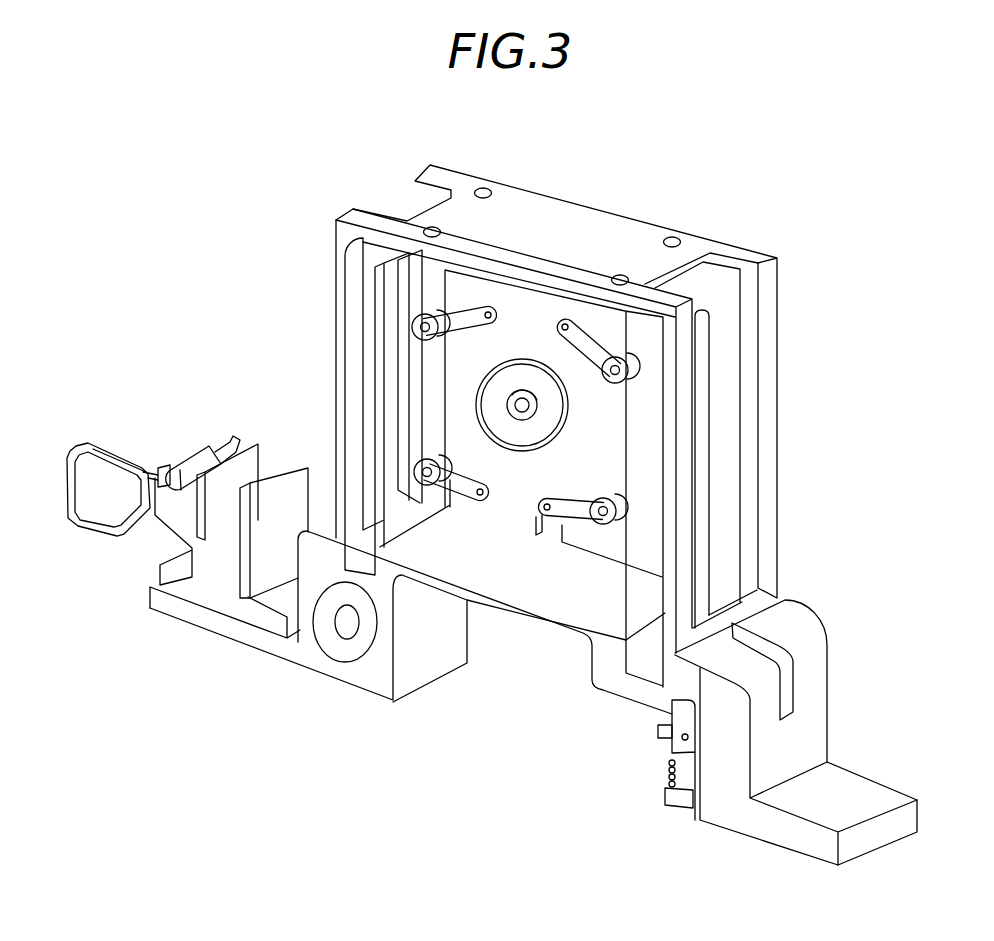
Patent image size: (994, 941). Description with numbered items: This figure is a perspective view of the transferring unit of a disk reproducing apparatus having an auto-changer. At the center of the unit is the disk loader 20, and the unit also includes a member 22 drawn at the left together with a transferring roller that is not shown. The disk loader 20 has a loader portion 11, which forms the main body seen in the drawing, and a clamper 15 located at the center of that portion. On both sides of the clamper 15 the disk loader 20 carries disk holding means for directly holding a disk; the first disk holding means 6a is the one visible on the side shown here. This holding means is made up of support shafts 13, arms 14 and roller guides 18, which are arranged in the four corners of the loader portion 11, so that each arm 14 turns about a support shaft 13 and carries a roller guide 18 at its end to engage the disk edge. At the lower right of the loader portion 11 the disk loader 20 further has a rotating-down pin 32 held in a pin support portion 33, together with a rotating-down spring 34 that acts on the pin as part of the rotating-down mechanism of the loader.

The loader portion 11 is at (647, 527).
The support shafts 13 is at (543, 508).
The arms 14 is at (521, 420).
The clamper 15 is at (542, 420).
The roller guides 18 is at (427, 342).
The disk loader 20 is at (407, 397).
The member 22 is at (96, 443).
The first disk holding means 6a is at (487, 463).
The rotating-down pin 32 is at (658, 737).
The pin support portion 33 is at (685, 723).
The rotating-down spring 34 is at (672, 772).